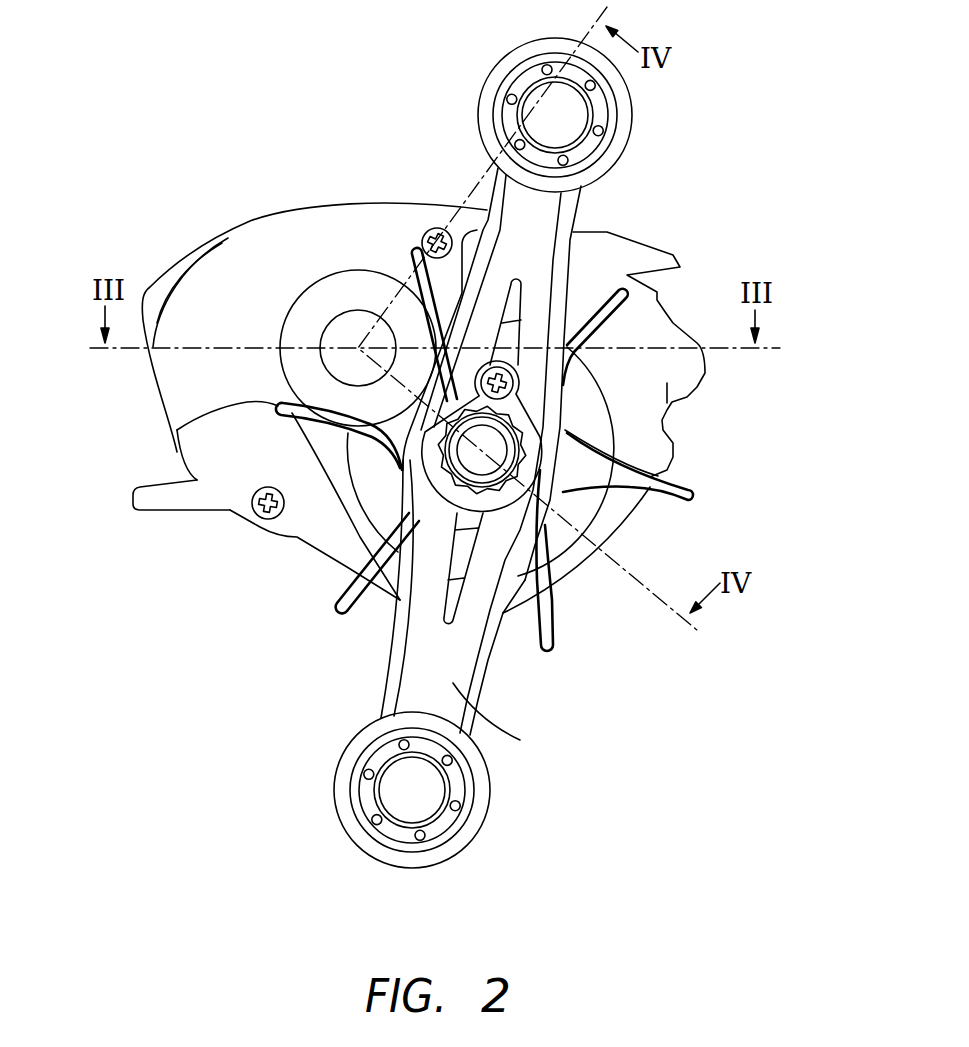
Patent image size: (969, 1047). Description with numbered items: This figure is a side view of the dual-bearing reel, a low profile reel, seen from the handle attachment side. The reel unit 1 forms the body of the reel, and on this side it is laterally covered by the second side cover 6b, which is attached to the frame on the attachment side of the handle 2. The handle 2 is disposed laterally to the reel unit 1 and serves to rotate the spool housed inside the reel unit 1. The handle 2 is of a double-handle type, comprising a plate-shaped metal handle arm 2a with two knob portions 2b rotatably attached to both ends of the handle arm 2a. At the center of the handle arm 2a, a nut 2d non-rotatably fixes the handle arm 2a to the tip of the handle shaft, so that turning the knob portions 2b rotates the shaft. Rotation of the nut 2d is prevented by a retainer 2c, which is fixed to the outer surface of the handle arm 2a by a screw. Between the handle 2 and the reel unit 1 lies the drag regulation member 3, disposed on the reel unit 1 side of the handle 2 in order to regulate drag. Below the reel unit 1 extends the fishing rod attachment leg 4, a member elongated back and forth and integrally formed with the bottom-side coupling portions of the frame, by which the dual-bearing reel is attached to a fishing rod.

The reel unit 1 is at (255, 206).
The handle 2 is at (592, 207).
The handle arm 2a is at (453, 683).
The knob portions 2b is at (625, 125).
The retainer 2c is at (556, 592).
The nut 2d is at (658, 476).
The drag regulation member 3 is at (173, 430).
The fishing rod attachment leg 4 is at (177, 512).
The second side cover 6b is at (237, 280).